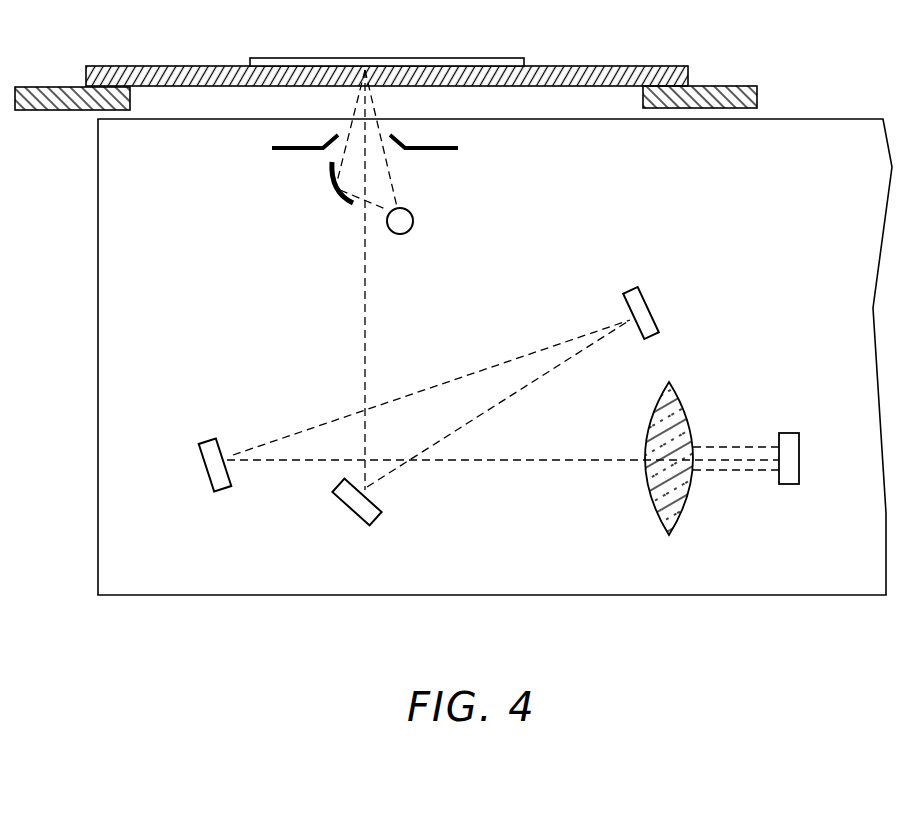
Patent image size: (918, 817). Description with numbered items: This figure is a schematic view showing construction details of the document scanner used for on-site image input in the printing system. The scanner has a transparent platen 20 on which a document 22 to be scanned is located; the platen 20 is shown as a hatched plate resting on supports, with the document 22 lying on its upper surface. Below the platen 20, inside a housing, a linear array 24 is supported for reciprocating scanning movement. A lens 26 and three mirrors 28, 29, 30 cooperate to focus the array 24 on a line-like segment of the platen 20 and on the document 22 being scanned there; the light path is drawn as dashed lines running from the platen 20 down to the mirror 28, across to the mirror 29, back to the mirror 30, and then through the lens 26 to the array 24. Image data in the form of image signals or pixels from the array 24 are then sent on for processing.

The transparent platen 20 is at (220, 86).
The document 22 is at (503, 57).
The linear array 24 is at (800, 447).
The lens 26 is at (650, 487).
The mirror 28 is at (352, 512).
The mirror 29 is at (652, 302).
The mirror 30 is at (205, 472).